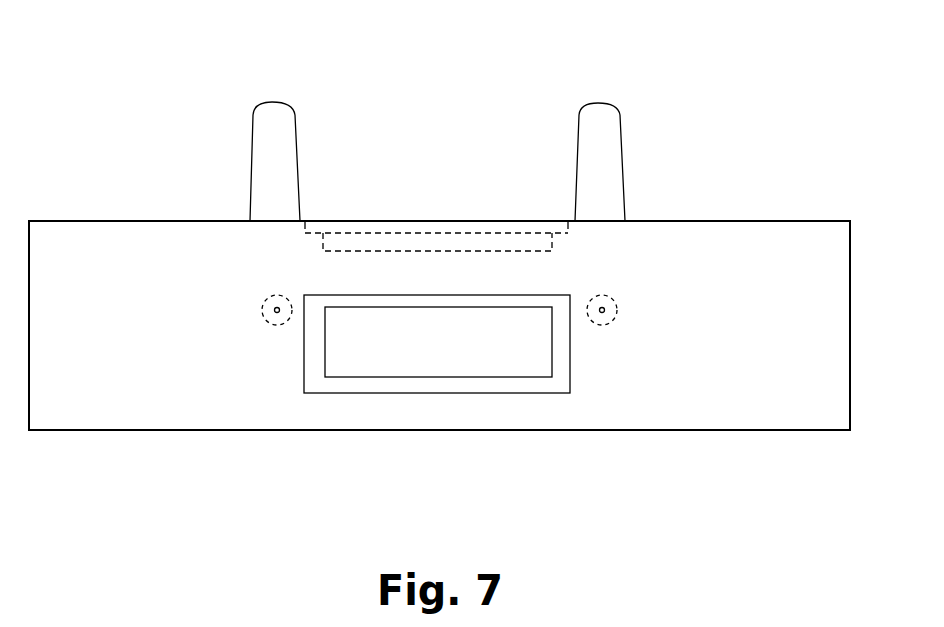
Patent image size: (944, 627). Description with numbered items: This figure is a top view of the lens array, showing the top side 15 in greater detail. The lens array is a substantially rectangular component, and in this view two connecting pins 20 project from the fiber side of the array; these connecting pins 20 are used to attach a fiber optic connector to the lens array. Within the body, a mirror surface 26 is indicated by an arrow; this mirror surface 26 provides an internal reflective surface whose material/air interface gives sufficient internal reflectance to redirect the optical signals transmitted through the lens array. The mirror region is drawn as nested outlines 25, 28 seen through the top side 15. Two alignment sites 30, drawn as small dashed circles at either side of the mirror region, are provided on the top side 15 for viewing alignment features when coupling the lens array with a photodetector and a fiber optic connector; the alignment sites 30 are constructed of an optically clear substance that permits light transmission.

The top side 15 is at (790, 368).
The connecting pins 20 is at (280, 125).
The outer rectangular recess 25 is at (537, 378).
The mirror surface 26 is at (397, 342).
The inner rectangle 28 is at (458, 350).
The alignment sites 30 is at (277, 310).